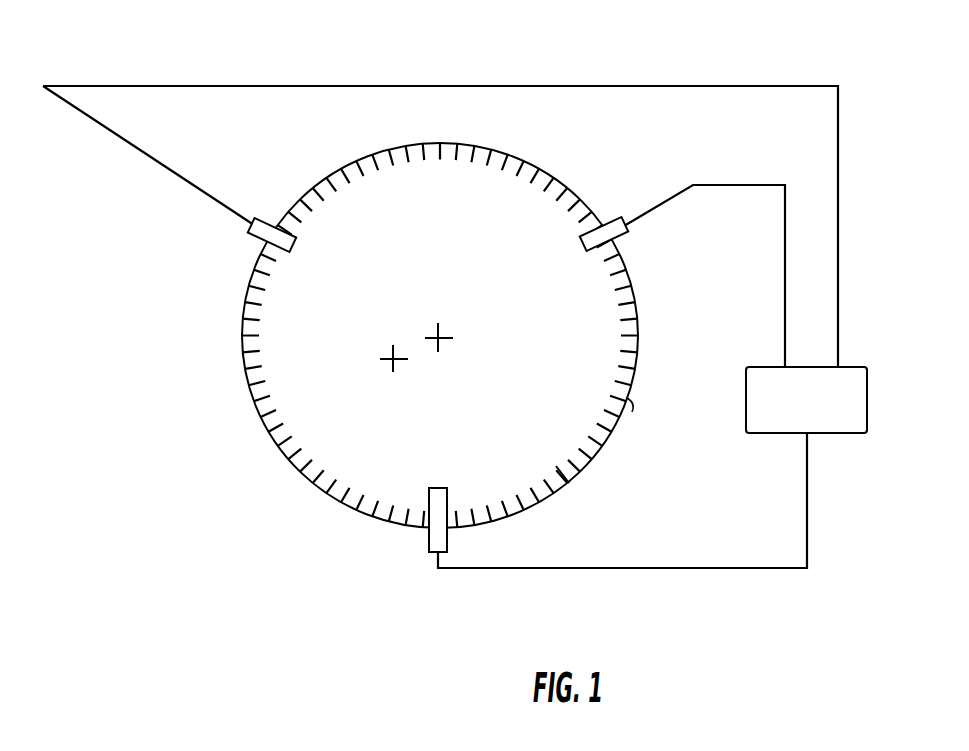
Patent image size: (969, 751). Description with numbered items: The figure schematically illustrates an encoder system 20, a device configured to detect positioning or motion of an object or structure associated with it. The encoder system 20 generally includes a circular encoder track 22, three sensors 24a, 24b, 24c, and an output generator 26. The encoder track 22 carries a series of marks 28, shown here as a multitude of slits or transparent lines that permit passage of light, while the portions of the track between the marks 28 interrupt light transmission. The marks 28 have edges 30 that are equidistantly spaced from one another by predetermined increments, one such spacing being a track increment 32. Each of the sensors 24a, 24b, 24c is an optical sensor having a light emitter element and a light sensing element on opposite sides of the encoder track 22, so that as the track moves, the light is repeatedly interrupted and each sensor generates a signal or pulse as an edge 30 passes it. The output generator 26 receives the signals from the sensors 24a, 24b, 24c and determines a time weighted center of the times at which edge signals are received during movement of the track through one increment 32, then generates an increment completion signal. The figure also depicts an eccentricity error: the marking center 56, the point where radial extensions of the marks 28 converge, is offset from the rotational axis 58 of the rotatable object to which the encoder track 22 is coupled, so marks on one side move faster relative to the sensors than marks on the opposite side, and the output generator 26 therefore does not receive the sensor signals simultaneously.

The encoder system 20 is at (316, 50).
The encoder track 22 is at (563, 188).
The sensor 24a is at (273, 227).
The sensor 24b is at (615, 220).
The sensor 24c is at (428, 538).
The output generator 26 is at (848, 367).
The marks 28 is at (560, 472).
The edges 30 is at (566, 468).
The track increment 32 is at (633, 408).
The marking center 56 is at (442, 334).
The rotational axis 58 is at (390, 354).